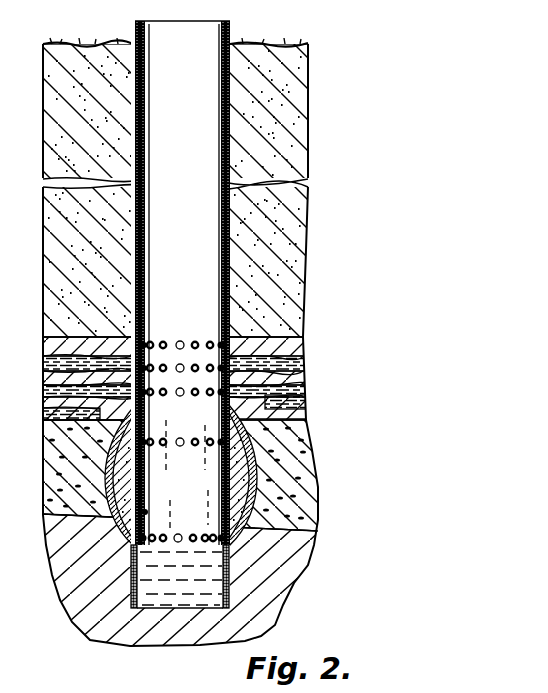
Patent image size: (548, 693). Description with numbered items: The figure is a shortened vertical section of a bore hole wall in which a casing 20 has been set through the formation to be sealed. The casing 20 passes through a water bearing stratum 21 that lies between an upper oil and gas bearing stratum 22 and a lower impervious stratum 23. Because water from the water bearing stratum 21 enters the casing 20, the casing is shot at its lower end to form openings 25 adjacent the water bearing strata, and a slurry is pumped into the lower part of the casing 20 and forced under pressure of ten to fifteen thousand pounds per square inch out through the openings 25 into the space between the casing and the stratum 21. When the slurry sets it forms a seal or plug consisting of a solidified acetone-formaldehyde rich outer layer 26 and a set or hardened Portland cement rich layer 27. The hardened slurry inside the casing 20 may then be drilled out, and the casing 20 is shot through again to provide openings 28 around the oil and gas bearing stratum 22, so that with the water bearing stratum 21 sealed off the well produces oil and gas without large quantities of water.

The casing 20 is at (231, 28).
The water bearing stratum 21 is at (307, 472).
The oil and gas bearing stratum 22 is at (278, 378).
The impervious stratum 23 is at (286, 562).
The openings 25 is at (148, 448).
The acetone-formaldehyde rich outer layer 26 is at (248, 437).
The Portland cement rich layer 27 is at (250, 457).
The openings 28 is at (180, 341).